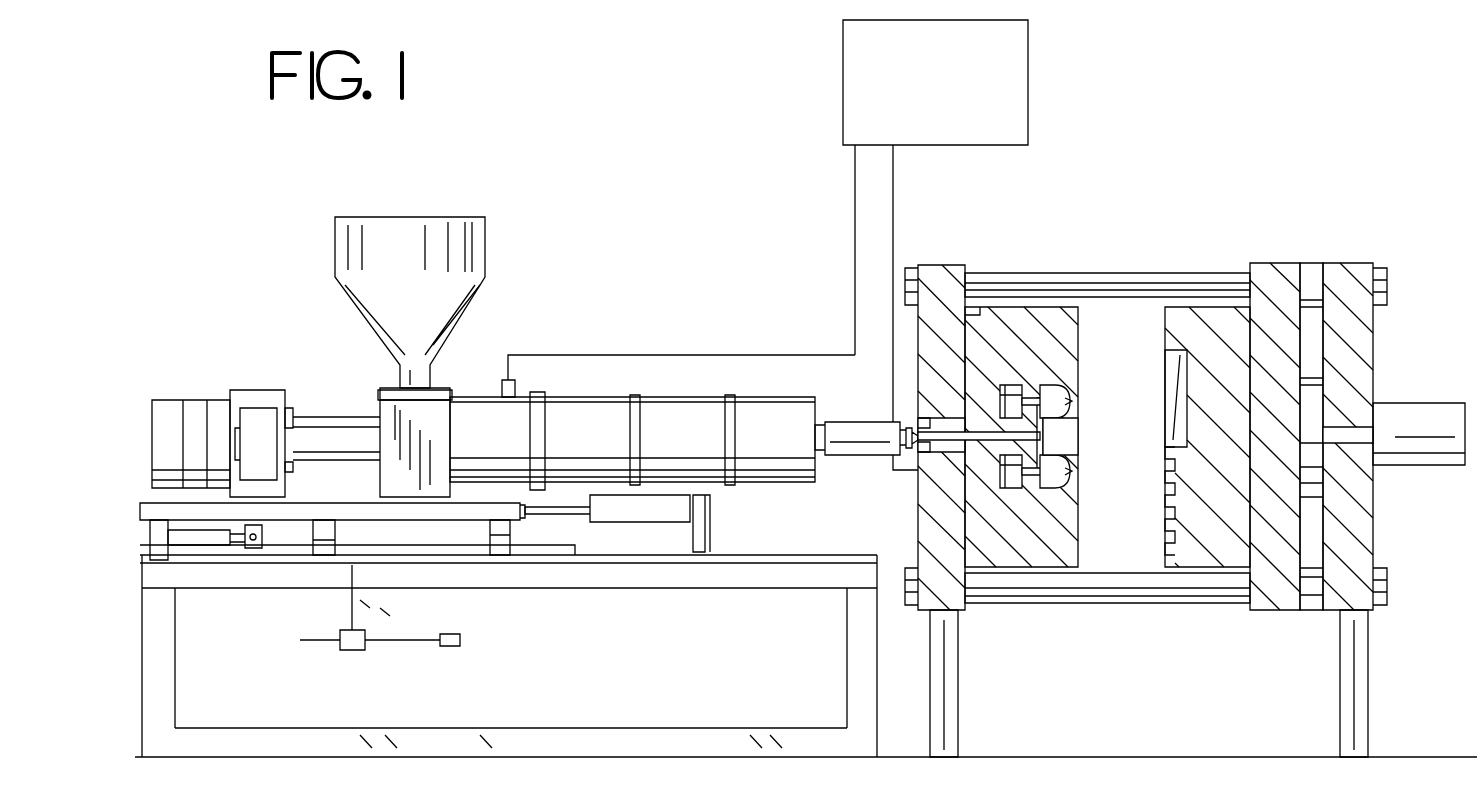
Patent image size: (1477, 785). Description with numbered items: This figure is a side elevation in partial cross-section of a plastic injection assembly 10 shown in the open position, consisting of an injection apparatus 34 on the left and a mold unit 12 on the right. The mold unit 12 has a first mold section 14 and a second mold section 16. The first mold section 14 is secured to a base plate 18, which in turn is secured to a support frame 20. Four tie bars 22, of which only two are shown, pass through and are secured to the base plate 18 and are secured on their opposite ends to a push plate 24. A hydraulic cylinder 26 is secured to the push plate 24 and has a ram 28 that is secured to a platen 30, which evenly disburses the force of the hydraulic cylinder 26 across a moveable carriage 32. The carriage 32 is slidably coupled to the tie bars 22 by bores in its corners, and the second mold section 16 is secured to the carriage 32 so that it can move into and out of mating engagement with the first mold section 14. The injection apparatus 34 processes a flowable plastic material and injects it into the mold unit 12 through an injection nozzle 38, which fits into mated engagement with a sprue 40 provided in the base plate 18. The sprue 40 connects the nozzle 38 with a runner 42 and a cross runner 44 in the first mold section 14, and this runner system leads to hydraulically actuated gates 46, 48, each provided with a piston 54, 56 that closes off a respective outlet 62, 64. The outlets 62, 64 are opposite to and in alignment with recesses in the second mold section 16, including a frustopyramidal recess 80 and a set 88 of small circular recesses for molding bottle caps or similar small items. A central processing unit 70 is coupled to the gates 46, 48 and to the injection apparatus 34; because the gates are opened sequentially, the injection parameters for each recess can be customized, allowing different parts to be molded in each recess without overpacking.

The plastic injection assembly 10 is at (760, 276).
The mold unit 12 is at (1090, 256).
The first mold section 14 is at (1005, 318).
The second mold section 16 is at (1200, 318).
The base plate 18 is at (942, 275).
The support frame 20 is at (940, 698).
The tie bars 22 is at (1120, 283).
The push plate 24 is at (1342, 270).
The hydraulic cylinder 26 is at (1420, 412).
The ram 28 is at (1350, 407).
The platen 30 is at (1300, 405).
The moveable carriage 32 is at (1272, 272).
The injection apparatus 34 is at (543, 320).
The injection nozzle 38 is at (843, 430).
The sprue 40 is at (935, 452).
The runner 42 is at (985, 440).
The cross runner 44 is at (1048, 450).
The gate 46 is at (1010, 395).
The gate 48 is at (1010, 490).
The piston 54 is at (1045, 398).
The piston 56 is at (1050, 478).
The outlet 62 is at (1068, 402).
The outlet 64 is at (1068, 472).
The central processing unit 70 is at (1028, 88).
The frustopyramidal recess 80 is at (1173, 360).
The set of small circular recesses 88 is at (1172, 500).